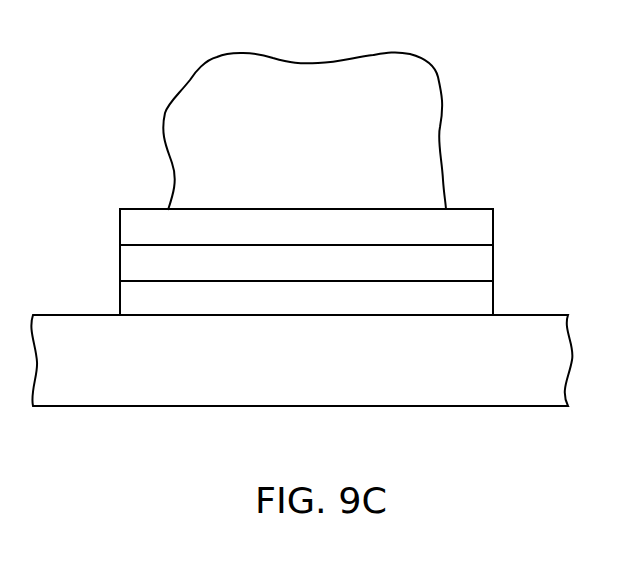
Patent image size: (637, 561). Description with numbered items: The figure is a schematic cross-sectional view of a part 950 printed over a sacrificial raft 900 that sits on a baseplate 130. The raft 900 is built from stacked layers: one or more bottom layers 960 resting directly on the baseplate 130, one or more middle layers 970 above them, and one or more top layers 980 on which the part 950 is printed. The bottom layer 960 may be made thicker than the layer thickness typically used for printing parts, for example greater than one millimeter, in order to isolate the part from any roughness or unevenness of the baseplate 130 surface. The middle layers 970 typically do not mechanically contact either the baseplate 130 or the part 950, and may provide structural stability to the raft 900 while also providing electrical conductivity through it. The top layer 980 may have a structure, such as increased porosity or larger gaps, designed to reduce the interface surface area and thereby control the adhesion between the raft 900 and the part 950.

The baseplate 130 is at (515, 389).
The part 950 is at (415, 137).
The raft 900 is at (301, 262).
The top layer 980 is at (489, 227).
The middle layer 970 is at (489, 261).
The bottom layer 960 is at (489, 291).